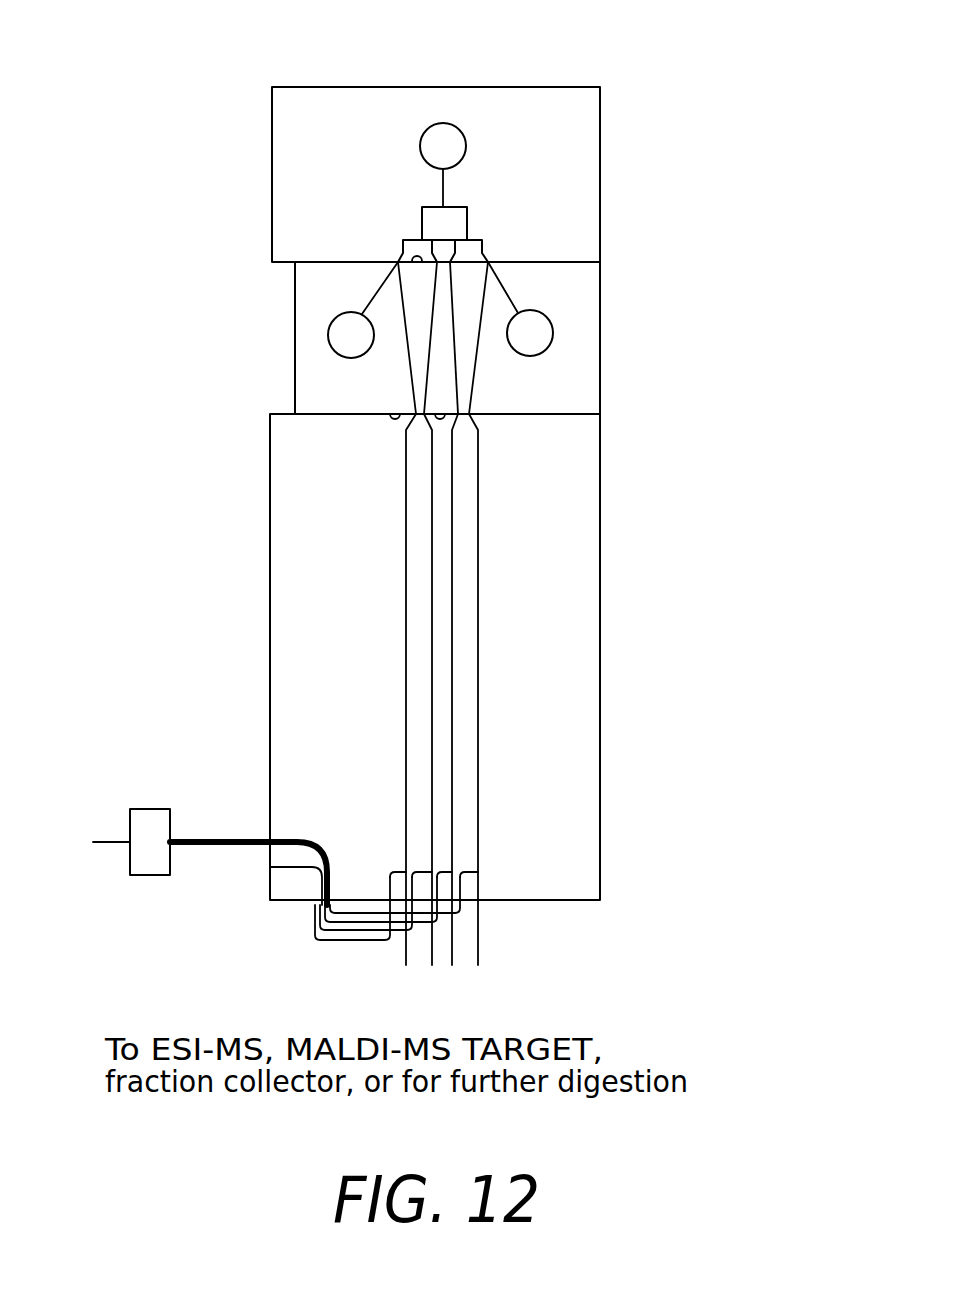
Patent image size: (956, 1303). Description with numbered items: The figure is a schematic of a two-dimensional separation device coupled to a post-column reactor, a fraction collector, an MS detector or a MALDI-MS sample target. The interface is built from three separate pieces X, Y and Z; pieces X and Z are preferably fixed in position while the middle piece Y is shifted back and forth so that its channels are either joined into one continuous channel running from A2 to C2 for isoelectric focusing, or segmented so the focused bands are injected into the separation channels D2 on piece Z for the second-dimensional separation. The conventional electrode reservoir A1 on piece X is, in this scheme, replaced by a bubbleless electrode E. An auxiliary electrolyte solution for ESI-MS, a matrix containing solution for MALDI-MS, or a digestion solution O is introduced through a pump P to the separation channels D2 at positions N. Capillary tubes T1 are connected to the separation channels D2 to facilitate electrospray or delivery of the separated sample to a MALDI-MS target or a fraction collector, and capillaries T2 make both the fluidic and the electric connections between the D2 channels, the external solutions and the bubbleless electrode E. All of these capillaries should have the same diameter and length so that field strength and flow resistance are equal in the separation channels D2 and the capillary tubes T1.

The piece X is at (436, 131).
The middle piece Y is at (409, 338).
The piece Z is at (393, 657).
The electrode reservoir A1 is at (403, 165).
The channel end reservoir A2 is at (363, 335).
The channel end reservoir C2 is at (520, 335).
The separation channels D2 is at (487, 657).
The bubbleless electrode E is at (266, 886).
The positions N is at (471, 859).
The auxiliary solution O is at (98, 874).
The pump P is at (158, 871).
The capillary tubes T1 is at (483, 932).
The capillaries T2 is at (347, 920).